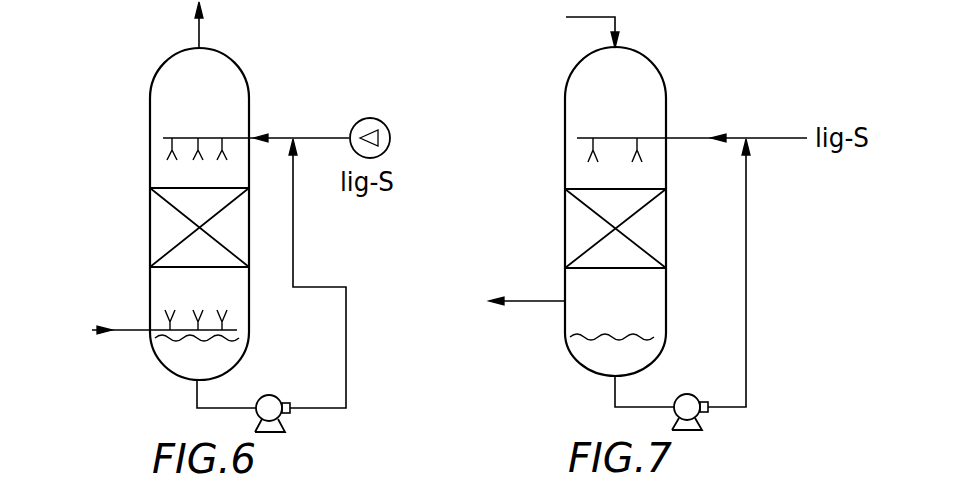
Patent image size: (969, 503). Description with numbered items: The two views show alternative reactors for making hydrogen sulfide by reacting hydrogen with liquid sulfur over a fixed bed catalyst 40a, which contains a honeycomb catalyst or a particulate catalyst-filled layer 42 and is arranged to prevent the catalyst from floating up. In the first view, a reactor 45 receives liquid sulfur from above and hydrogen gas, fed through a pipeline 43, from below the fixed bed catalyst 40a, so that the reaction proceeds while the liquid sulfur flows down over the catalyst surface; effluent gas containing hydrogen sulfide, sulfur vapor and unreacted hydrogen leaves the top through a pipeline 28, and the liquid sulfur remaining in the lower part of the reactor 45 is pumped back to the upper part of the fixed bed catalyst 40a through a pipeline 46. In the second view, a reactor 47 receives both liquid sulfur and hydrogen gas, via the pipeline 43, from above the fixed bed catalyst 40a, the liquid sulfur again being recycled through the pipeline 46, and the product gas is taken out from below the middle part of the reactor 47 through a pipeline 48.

In FIG. 6, the pipeline 28 is at (200, 31).
In FIG. 6, the reactor 45 is at (151, 84).
In FIG. 7, the reactor 47 is at (565, 104).
In FIG. 6, the fixed bed catalyst 40a is at (164, 212).
In FIG. 7, the fixed bed catalyst 40a is at (578, 230).
In FIG. 6, the pipeline 43 is at (131, 333).
In FIG. 7, the pipeline 43 is at (619, 30).
In FIG. 6, the particulate catalyst-filled layer 42 is at (185, 372).
In FIG. 7, the particulate catalyst-filled layer 42 is at (597, 367).
In FIG. 6, the pipeline 46 is at (347, 336).
In FIG. 7, the pipeline 46 is at (746, 336).
In FIG. 7, the pipeline 48 is at (538, 304).